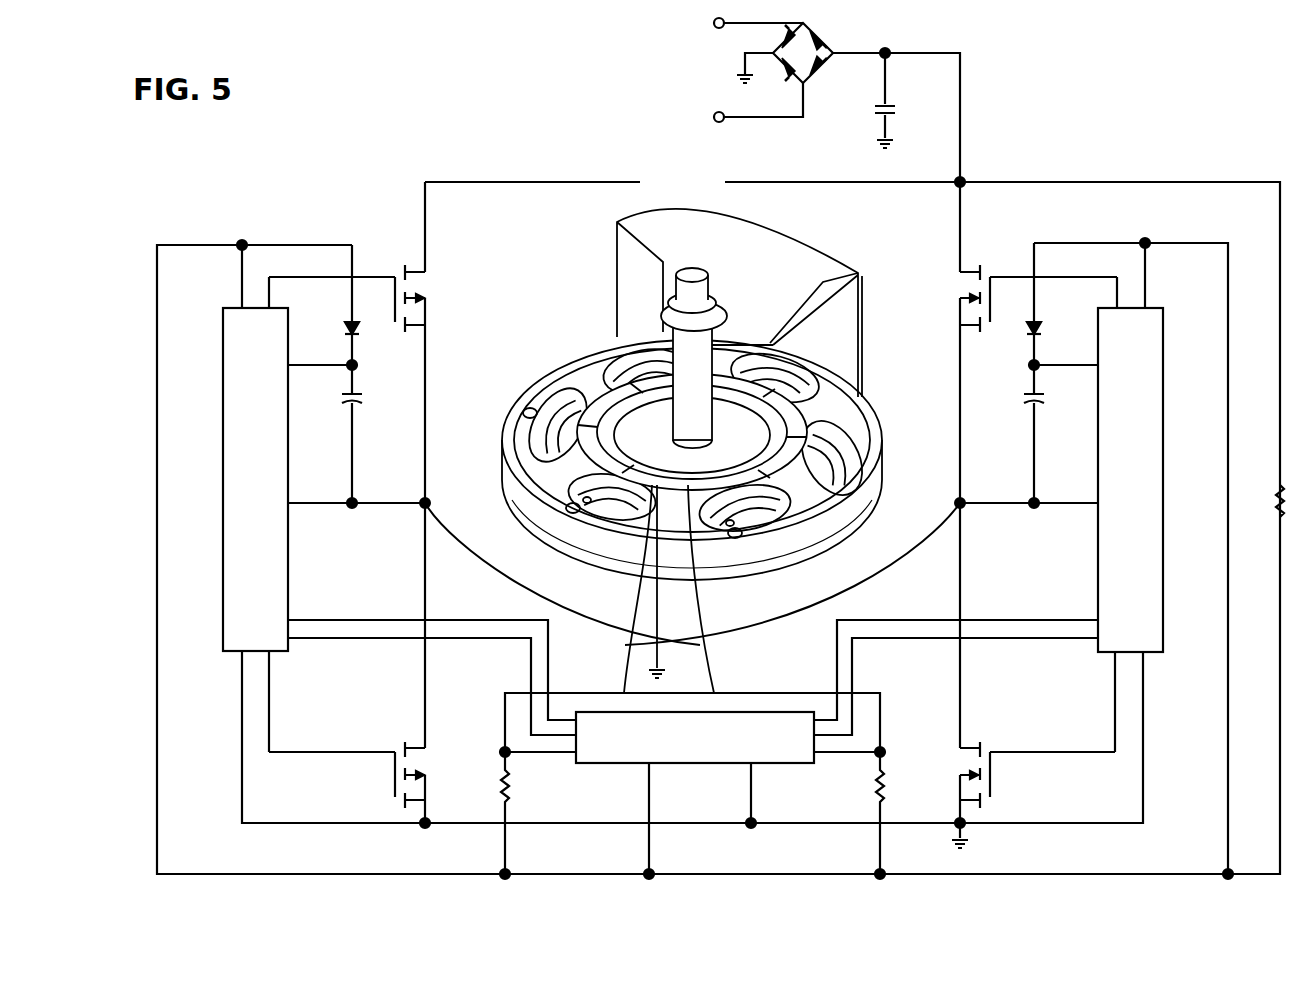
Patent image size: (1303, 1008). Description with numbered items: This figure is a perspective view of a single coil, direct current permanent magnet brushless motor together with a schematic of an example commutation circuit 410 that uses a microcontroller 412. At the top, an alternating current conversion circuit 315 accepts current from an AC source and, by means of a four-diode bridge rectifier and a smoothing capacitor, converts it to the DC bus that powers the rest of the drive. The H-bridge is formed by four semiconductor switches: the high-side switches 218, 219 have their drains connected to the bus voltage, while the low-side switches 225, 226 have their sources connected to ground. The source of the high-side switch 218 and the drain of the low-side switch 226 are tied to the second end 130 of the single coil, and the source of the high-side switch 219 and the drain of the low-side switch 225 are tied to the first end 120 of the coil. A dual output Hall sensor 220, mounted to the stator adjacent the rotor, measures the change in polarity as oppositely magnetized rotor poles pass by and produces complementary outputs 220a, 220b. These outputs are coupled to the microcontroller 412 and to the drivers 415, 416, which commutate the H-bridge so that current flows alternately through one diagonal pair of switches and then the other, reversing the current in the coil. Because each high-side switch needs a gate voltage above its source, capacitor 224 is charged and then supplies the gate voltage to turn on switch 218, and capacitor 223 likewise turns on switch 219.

The circuit 410 is at (1127, 131).
The alternating current conversion circuit 315 is at (702, 78).
The driver 416 is at (279, 538).
The driver 415 is at (1154, 538).
The high-side switch 218 is at (419, 270).
The high-side switch 219 is at (968, 270).
The low-side switch 226 is at (419, 747).
The low-side switch 225 is at (968, 747).
The capacitor 224 is at (357, 404).
The capacitor 223 is at (1029, 404).
The second end of the single coil 130 is at (428, 503).
The first end of the single coil 120 is at (958, 503).
The microcontroller 412 is at (698, 763).
The sensor 220 is at (683, 481).
The output of the sensor 220a is at (712, 685).
The output of the sensor 220b is at (621, 666).